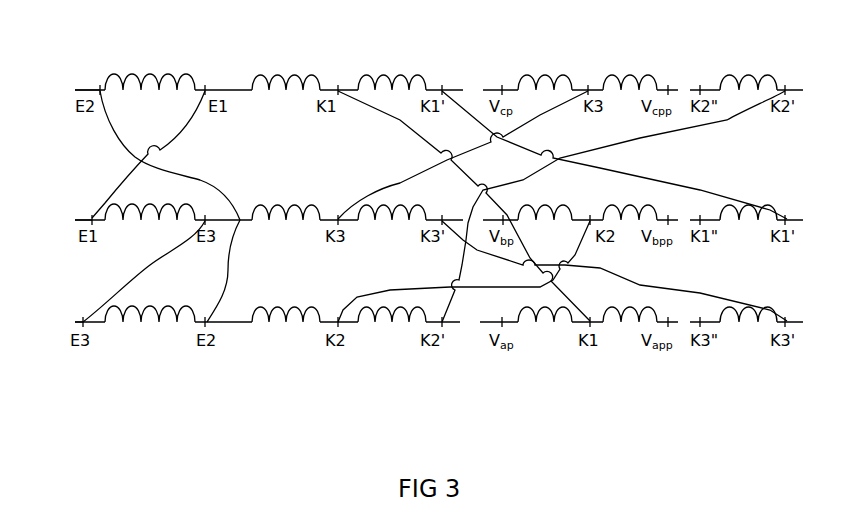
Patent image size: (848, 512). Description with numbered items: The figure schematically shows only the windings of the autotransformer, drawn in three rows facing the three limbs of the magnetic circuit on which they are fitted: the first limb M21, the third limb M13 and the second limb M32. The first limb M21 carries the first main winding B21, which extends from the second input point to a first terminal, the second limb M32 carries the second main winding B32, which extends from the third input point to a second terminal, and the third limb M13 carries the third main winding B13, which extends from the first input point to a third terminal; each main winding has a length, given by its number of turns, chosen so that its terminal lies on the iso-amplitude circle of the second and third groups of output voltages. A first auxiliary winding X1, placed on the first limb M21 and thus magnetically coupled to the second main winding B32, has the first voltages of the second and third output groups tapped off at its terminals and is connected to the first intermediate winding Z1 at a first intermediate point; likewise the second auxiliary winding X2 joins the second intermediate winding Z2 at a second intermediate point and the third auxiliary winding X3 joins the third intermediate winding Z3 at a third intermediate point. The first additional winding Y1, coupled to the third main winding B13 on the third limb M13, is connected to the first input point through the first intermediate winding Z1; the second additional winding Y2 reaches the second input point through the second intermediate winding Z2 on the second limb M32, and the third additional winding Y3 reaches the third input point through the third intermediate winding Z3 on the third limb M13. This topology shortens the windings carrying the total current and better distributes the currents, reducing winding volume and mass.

The first limb M21 is at (65, 90).
The third limb M13 is at (61, 221).
The second limb M32 is at (56, 322).
The first main winding B21 is at (150, 67).
The third main winding B13 is at (150, 201).
The second main winding B32 is at (150, 301).
The first intermediate winding Z1 is at (427, 58).
The second intermediate winding Z2 is at (425, 355).
The third intermediate winding Z3 is at (430, 190).
The first auxiliary winding X1 is at (675, 365).
The second auxiliary winding X2 is at (670, 201).
The third auxiliary winding X3 is at (665, 60).
The first additional winding Y1 is at (748, 196).
The second additional winding Y2 is at (748, 70).
The third additional winding Y3 is at (748, 300).